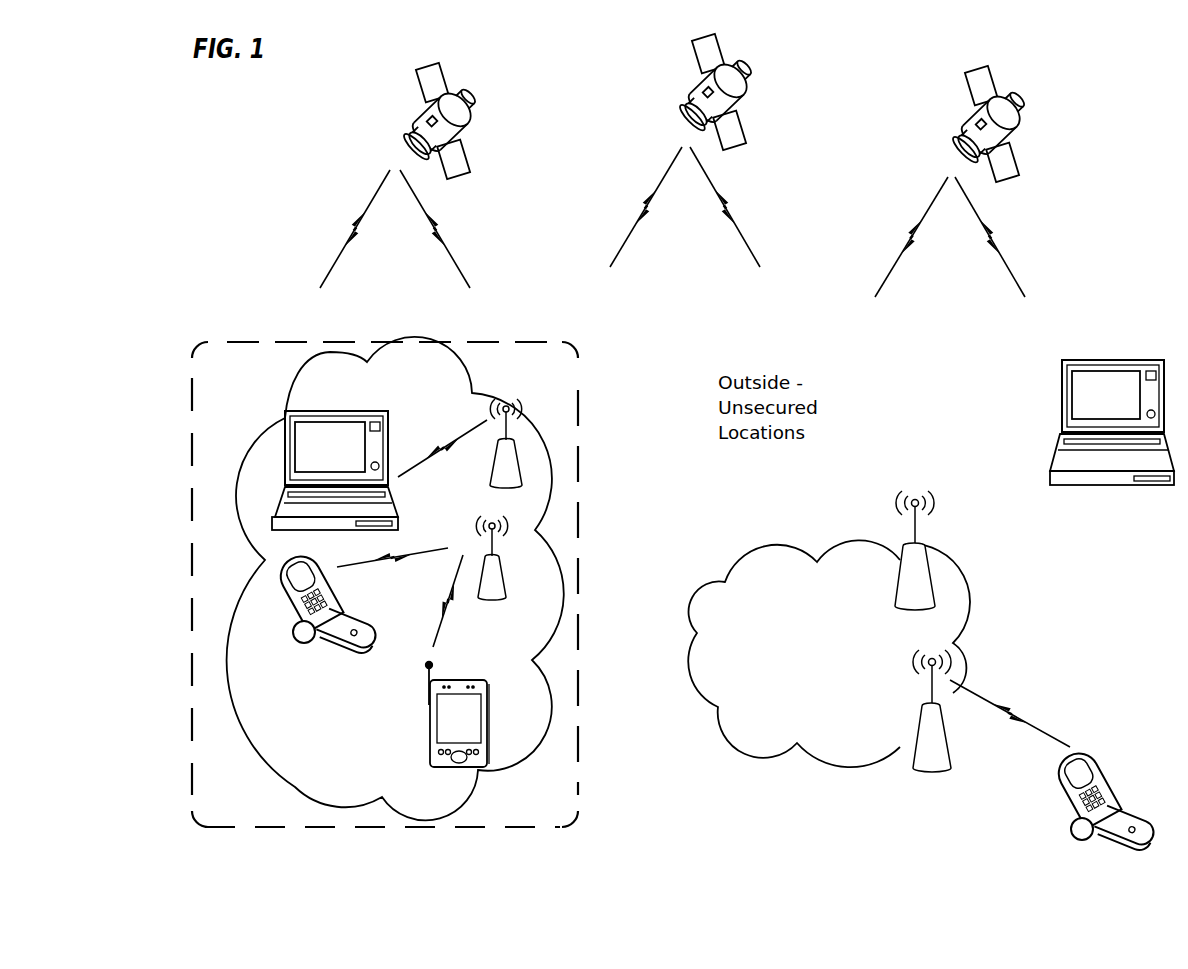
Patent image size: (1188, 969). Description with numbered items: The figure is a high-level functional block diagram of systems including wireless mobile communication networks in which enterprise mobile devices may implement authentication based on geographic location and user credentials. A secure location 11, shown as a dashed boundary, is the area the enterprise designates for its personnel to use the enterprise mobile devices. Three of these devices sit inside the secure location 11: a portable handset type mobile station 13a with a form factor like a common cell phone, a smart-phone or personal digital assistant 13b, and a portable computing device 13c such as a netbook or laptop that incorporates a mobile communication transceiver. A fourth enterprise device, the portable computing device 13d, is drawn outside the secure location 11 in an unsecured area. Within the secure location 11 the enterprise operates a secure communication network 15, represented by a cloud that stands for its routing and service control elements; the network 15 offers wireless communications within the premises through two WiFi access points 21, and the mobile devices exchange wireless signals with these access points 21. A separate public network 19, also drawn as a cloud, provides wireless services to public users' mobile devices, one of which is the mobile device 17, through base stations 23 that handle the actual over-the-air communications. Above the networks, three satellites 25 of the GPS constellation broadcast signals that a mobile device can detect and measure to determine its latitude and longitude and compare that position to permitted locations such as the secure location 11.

The secure location 11 is at (190, 437).
The portable handset type mobile station 13a is at (268, 582).
The smart-phone or personal digital assistant 13b is at (430, 763).
The portable computing device 13c is at (290, 420).
The portable computing device 13d is at (1068, 379).
The enterprise communication network 15 is at (462, 362).
The mobile device 17 is at (1078, 829).
The public network 19 is at (783, 542).
The access point 21 is at (520, 478).
The base station 23 is at (932, 565).
The satellite 25 is at (475, 115).